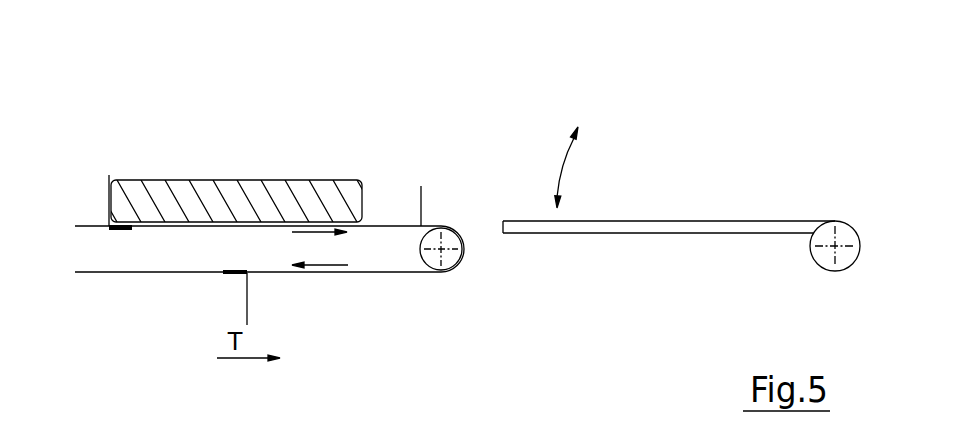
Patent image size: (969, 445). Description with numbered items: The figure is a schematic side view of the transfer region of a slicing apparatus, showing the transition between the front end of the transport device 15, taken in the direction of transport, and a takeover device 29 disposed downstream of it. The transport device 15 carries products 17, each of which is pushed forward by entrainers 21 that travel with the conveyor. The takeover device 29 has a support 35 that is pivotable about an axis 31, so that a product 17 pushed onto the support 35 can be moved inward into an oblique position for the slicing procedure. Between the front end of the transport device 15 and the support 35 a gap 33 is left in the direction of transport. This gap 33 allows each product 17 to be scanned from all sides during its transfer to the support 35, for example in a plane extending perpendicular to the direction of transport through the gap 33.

The transport device 15 is at (137, 110).
The product 17 is at (238, 212).
The entrainer 21 is at (107, 196).
The takeover device 29 is at (745, 169).
The axis 31 is at (833, 248).
The gap 33 is at (484, 196).
The support 35 is at (646, 227).